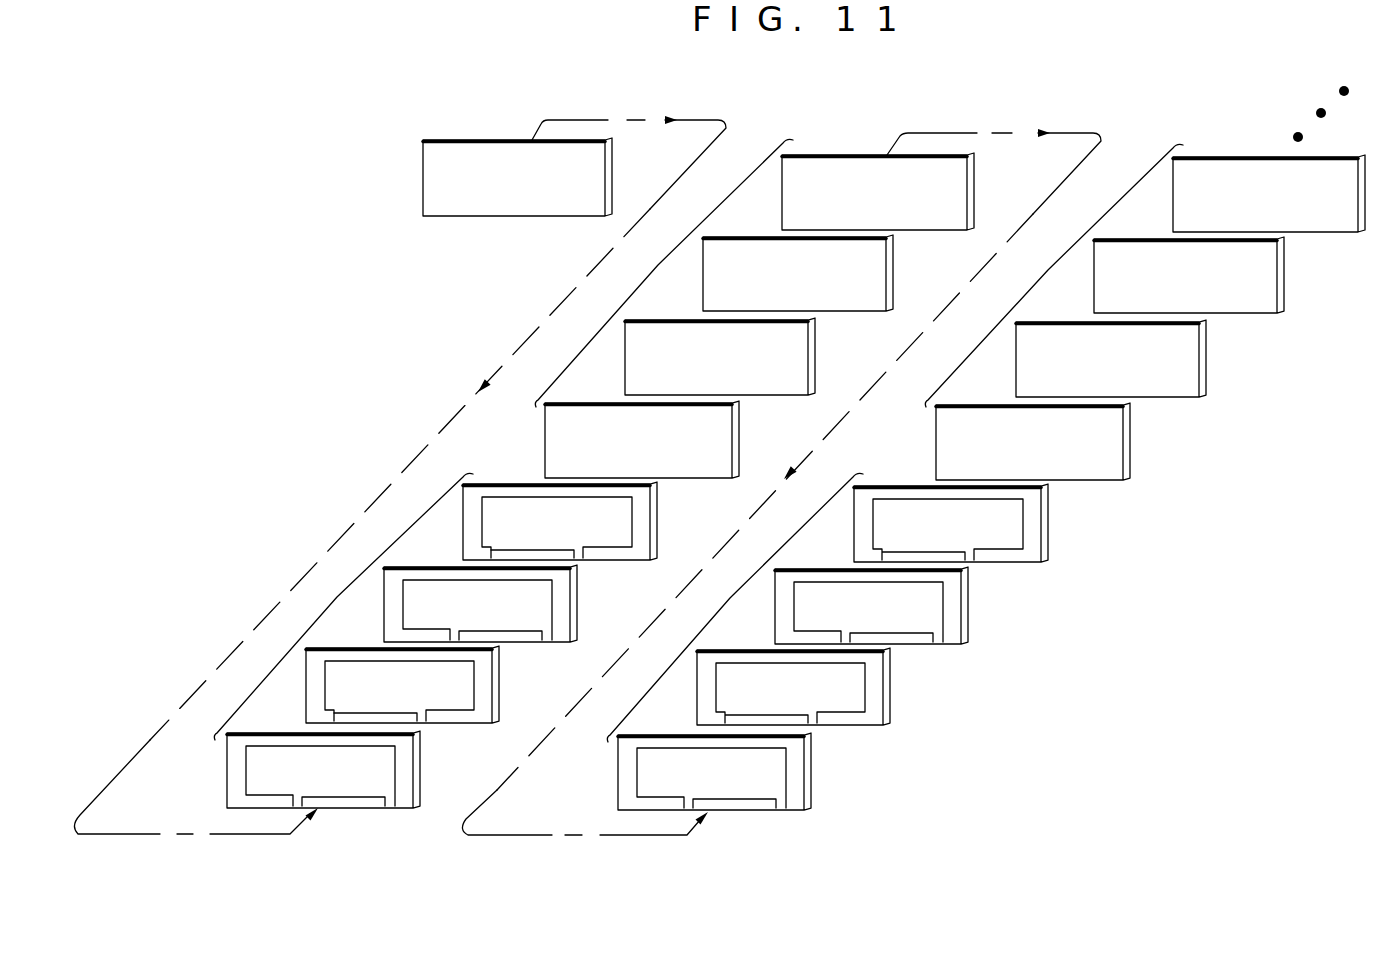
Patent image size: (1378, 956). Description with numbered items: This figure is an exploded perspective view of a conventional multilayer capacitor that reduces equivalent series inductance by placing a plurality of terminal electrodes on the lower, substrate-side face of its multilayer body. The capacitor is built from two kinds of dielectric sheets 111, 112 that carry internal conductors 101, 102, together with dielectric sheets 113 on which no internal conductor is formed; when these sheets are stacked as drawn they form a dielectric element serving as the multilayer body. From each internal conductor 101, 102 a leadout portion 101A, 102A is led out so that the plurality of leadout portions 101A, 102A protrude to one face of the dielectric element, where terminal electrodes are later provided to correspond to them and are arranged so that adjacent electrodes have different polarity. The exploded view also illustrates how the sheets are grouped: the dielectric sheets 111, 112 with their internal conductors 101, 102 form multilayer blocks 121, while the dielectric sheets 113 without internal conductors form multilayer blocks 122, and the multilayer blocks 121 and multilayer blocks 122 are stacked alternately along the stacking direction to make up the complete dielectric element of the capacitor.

The internal conductor 101 is at (537, 603).
The leadout portion 101A is at (292, 804).
The internal conductor 102 is at (617, 531).
The leadout portion 102A is at (323, 718).
The dielectric sheet 111 is at (557, 578).
The dielectric sheet 112 is at (620, 512).
The dielectric sheet 113 is at (937, 201).
The multilayer block 121 is at (344, 596).
The multilayer block 122 is at (659, 268).